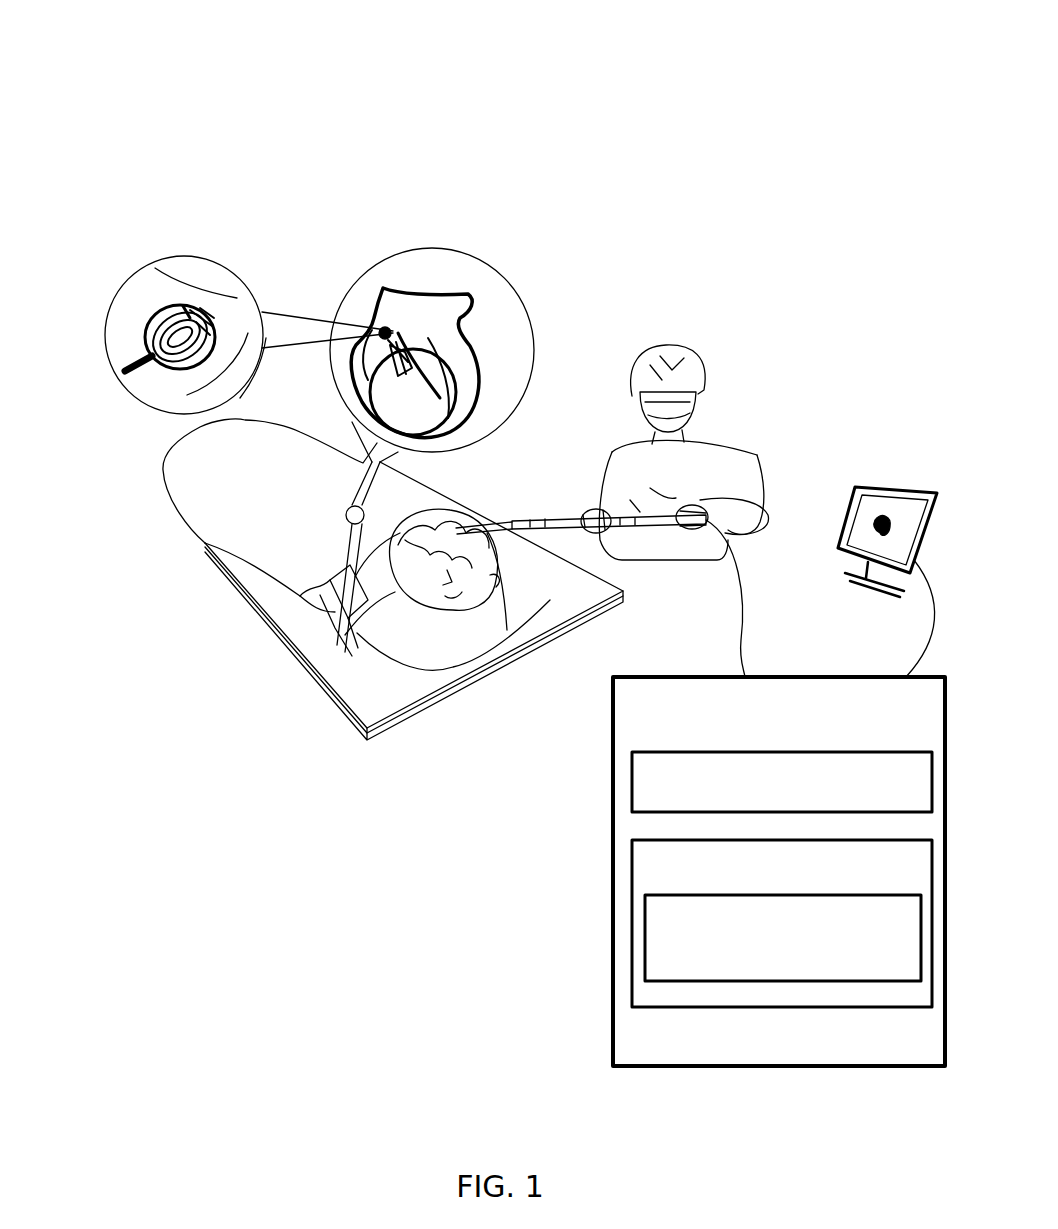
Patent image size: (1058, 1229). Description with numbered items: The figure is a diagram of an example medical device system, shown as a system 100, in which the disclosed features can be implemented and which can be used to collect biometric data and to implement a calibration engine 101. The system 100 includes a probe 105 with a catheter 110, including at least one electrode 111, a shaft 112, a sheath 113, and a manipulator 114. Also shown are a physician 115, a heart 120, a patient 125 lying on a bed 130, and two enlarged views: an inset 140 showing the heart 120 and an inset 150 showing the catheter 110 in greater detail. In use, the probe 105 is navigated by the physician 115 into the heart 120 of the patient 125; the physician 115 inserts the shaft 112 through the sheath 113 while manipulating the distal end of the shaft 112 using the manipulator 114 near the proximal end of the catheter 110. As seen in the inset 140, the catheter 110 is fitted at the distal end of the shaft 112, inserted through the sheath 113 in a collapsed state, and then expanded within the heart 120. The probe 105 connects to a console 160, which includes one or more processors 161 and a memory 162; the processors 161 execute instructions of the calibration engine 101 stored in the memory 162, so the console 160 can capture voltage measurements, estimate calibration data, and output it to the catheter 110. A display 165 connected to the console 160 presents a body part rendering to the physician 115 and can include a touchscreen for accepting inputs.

The system 100 is at (781, 92).
The calibration engine 101 is at (783, 938).
The probe 105 is at (604, 500).
The catheter 110 is at (155, 363).
The electrode 111 is at (178, 372).
The shaft 112 is at (188, 322).
The sheath 113 is at (143, 365).
The manipulator 114 is at (654, 517).
The physician 115 is at (667, 345).
The heart 120 is at (470, 326).
The patient 125 is at (467, 603).
The bed 130 is at (318, 677).
The inset 140 is at (388, 250).
The inset 150 is at (228, 266).
The console 160 is at (779, 871).
The processor 161 is at (782, 782).
The memory 162 is at (782, 923).
The display 165 is at (877, 490).